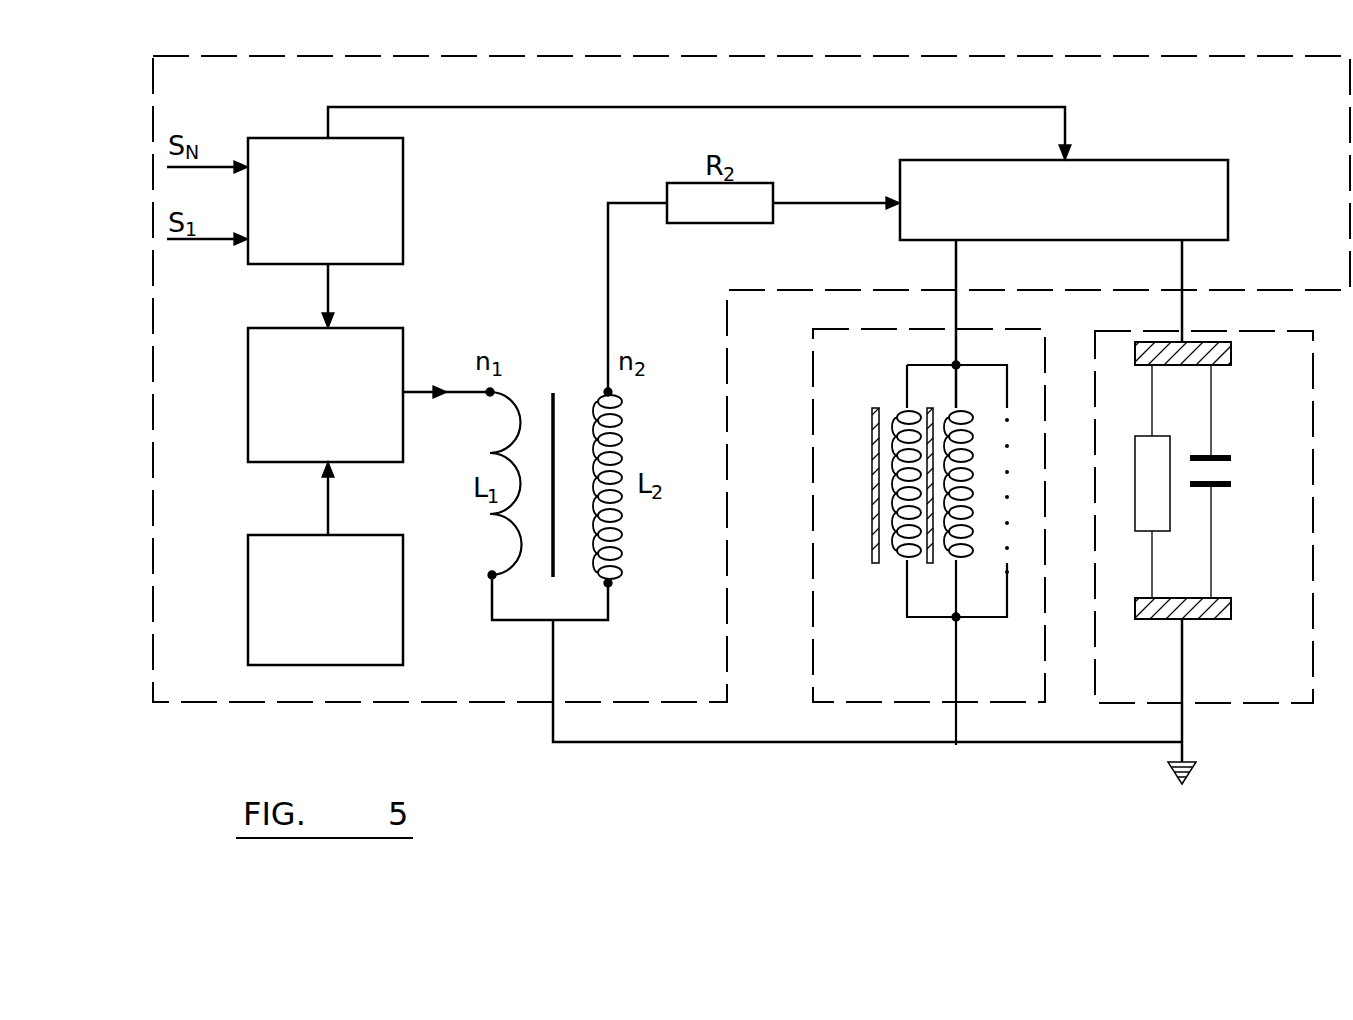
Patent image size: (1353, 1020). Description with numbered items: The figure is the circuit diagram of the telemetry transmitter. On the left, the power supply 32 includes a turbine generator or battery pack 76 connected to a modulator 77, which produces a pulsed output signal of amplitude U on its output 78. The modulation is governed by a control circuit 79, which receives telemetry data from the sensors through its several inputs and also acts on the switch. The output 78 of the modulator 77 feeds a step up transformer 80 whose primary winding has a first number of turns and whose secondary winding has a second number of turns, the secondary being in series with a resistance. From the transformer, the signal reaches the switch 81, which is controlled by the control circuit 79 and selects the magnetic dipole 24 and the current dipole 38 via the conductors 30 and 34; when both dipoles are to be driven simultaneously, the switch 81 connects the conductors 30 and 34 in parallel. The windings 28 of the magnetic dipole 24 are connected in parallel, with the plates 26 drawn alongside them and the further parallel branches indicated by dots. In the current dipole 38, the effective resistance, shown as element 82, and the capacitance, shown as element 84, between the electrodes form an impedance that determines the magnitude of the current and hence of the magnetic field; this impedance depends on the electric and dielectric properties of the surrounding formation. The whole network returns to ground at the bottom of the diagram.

The control circuit 79 is at (380, 228).
The output 78 is at (413, 390).
The step up transformer 80 is at (553, 388).
The modulator 77 is at (265, 438).
The turbine generator or battery pack 76 is at (267, 635).
The power supply 32 is at (1195, 108).
The switch 81 is at (1195, 195).
The conductor 30 is at (956, 273).
The conductor 34 is at (1182, 272).
The magnetic dipole 24 is at (860, 376).
The electrode plates 26 is at (933, 438).
The windings 28 is at (950, 553).
The current dipole 38 is at (1292, 374).
The resistor Rc 82 is at (1153, 460).
The capacitor C1 84 is at (1222, 490).